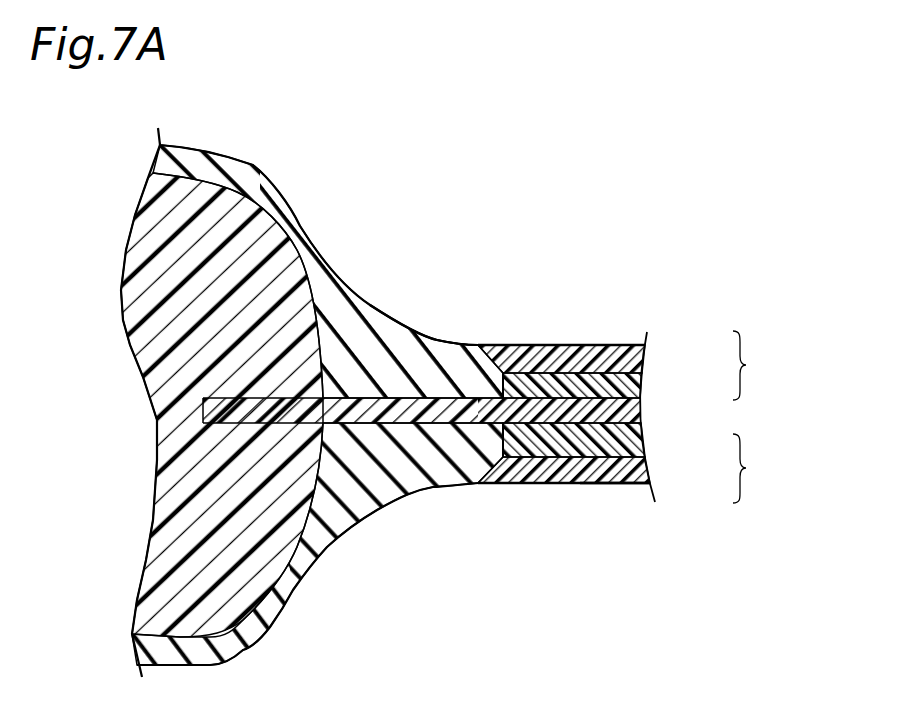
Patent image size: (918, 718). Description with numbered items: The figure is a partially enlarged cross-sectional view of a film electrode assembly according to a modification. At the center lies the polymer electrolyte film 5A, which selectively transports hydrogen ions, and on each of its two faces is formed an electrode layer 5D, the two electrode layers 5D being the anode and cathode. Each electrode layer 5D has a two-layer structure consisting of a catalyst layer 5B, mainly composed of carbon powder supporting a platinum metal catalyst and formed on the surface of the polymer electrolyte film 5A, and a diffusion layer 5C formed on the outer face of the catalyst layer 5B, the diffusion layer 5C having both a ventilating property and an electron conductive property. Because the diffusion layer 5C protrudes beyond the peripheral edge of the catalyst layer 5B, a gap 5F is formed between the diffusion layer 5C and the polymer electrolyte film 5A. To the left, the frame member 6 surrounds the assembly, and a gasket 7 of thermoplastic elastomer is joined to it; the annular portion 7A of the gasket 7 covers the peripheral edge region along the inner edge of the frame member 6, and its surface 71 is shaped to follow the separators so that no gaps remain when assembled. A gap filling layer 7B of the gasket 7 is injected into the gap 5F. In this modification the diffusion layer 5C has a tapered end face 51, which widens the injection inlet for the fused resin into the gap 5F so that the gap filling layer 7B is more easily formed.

The frame member 6 is at (229, 238).
The gasket 7 is at (326, 273).
The surface of the annular portion 71 is at (304, 220).
The annular portion 7A is at (432, 342).
The gap filling layer 7B is at (578, 334).
The polymer electrolyte film 5A is at (413, 418).
The catalyst layer 5B is at (630, 387).
The diffusion layer 5C is at (643, 354).
The electrode layer 5D is at (762, 417).
The gap 5F is at (613, 487).
The end face 51 is at (508, 385).